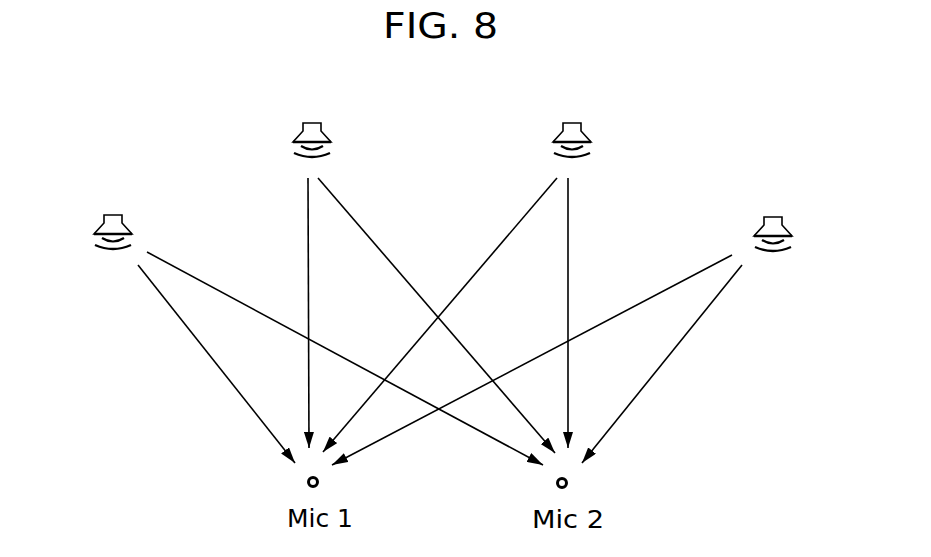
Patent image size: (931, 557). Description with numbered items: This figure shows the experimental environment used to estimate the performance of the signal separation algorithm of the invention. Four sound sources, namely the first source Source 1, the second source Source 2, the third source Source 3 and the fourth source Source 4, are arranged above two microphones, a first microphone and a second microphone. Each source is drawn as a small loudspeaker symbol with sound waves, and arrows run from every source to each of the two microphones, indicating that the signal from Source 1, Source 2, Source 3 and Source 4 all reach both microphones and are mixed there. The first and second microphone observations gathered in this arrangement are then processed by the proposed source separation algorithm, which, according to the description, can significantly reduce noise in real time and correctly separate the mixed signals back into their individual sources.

The first source 1 is at (113, 214).
The second source 2 is at (321, 118).
The third source 3 is at (584, 118).
The fourth source 4 is at (777, 215).